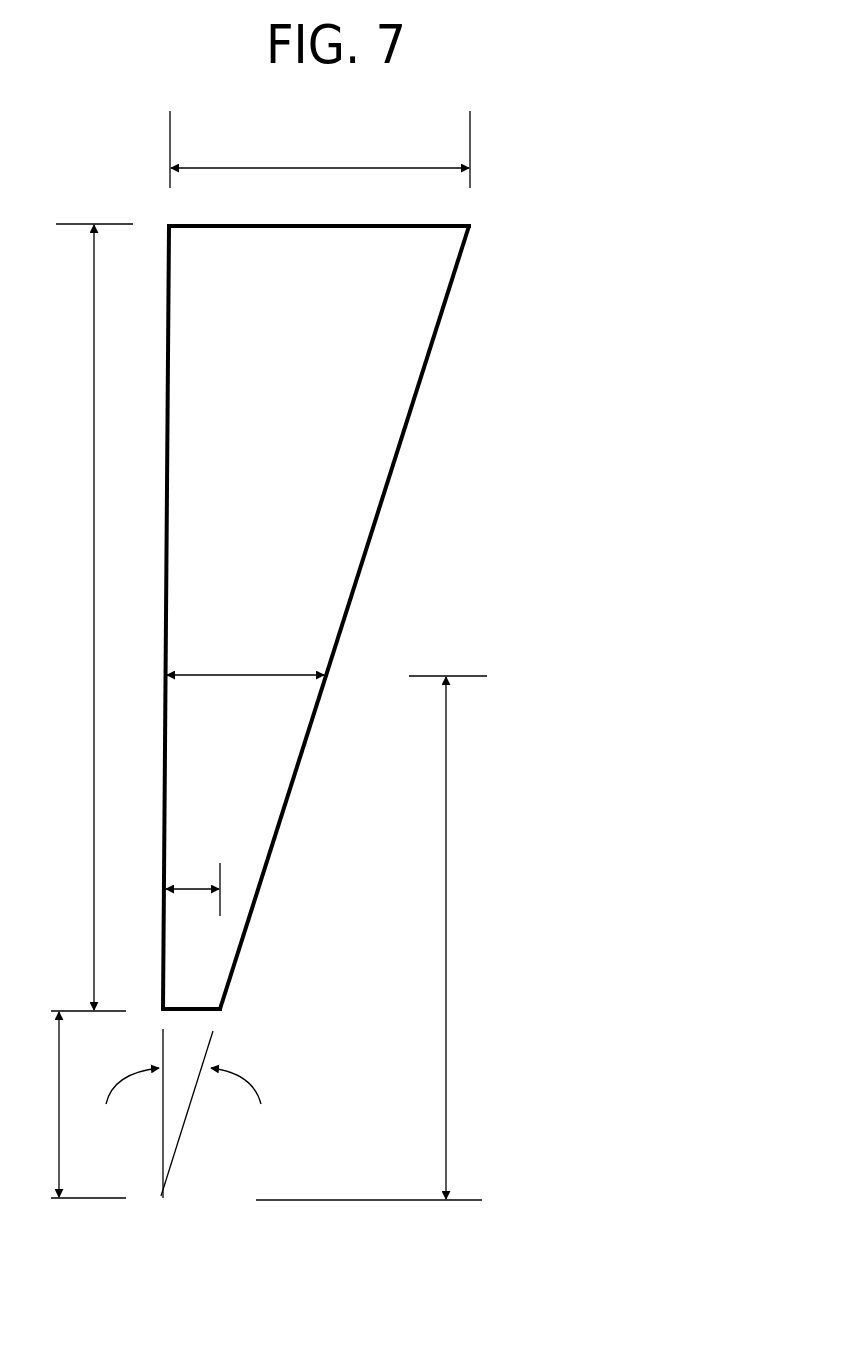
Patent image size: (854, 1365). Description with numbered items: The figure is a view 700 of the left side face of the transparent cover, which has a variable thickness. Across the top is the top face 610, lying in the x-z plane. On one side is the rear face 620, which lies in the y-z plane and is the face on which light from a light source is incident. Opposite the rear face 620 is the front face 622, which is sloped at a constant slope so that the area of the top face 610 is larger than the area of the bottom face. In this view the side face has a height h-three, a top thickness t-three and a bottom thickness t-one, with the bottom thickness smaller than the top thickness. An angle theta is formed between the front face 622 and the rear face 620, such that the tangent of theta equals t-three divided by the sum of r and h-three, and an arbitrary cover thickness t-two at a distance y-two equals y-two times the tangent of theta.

The view of the left side face 700 is at (580, 149).
The top face 610 is at (253, 287).
The rear face 620 is at (163, 482).
The front face 622 is at (370, 545).